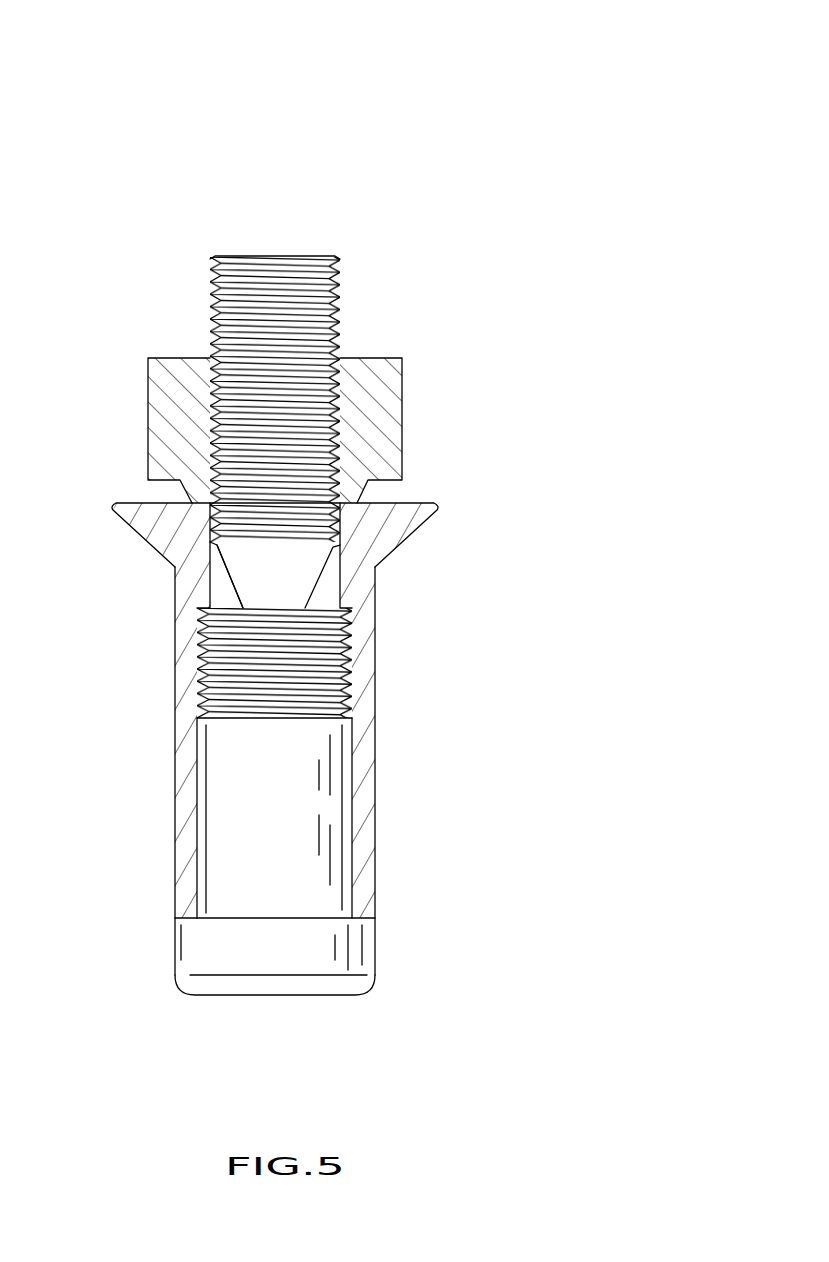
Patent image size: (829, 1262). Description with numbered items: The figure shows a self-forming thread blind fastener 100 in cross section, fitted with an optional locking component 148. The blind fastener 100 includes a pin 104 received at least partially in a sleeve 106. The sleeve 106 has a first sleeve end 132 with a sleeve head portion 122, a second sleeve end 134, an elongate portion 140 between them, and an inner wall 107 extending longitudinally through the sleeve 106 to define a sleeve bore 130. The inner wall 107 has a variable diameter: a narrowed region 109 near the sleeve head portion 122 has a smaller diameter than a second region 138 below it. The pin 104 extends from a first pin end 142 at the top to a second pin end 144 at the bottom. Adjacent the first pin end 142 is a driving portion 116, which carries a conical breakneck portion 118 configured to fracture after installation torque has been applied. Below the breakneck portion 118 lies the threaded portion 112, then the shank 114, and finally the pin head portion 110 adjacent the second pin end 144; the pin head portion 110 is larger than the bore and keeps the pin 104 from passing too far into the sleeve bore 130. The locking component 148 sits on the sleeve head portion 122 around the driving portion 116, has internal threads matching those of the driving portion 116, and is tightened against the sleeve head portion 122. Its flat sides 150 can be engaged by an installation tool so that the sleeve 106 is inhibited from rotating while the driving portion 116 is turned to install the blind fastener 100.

The self-forming thread blind fastener 100 is at (452, 140).
The pin 104 is at (210, 343).
The first pin end 142 is at (310, 257).
The driving portion 116 is at (290, 316).
The locking component 148 is at (368, 394).
The flat sides 150 is at (402, 438).
The first sleeve end 132 is at (140, 503).
The sleeve head portion 122 is at (395, 520).
The narrowed region 109 is at (210, 555).
The breakneck portion 118 is at (250, 570).
The sleeve bore 130 is at (325, 588).
The threaded portion 112 is at (355, 650).
The elongate portion 140 is at (363, 740).
The second region 138 is at (353, 878).
The shank 114 is at (313, 798).
The sleeve 106 is at (175, 788).
The inner wall 107 is at (195, 833).
The second sleeve end 134 is at (187, 915).
The pin head portion 110 is at (193, 972).
The second pin end 144 is at (318, 994).